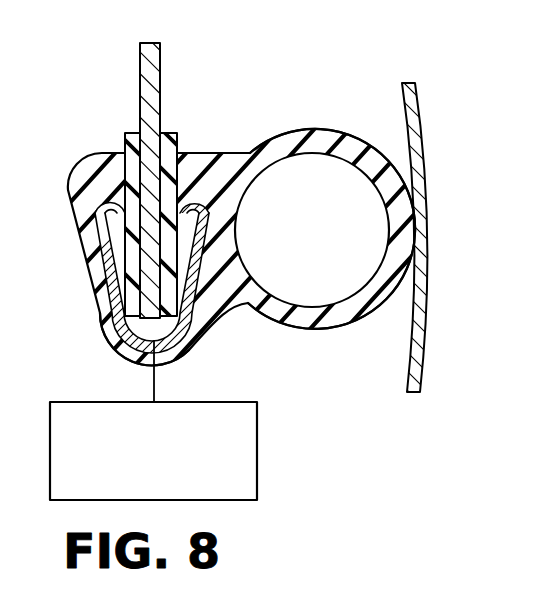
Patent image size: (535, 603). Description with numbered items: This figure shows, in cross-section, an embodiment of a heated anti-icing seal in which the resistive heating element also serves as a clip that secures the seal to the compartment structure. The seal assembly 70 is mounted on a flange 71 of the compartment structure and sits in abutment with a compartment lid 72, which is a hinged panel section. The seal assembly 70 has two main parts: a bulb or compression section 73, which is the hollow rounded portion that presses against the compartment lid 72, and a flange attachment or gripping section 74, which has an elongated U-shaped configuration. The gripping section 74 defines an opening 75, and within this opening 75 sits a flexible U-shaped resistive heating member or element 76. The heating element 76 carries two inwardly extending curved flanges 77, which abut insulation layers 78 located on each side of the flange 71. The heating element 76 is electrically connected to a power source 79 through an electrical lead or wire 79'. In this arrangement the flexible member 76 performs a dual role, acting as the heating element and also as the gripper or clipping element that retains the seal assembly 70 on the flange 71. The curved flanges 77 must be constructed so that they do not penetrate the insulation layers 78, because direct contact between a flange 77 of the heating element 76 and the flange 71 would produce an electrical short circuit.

The seal assembly 70 is at (289, 110).
The flange 71 is at (160, 70).
The compartment lid 72 is at (414, 100).
The bulb or compression section 73 is at (345, 333).
The flange attachment or gripping section 74 is at (230, 338).
The opening 75 is at (113, 350).
The heating member or element 76 is at (110, 280).
The curved flanges 77 is at (120, 217).
The insulation layers 78 is at (128, 133).
The power source 79 is at (188, 451).
The electrical lead or wire 79' is at (210, 371).